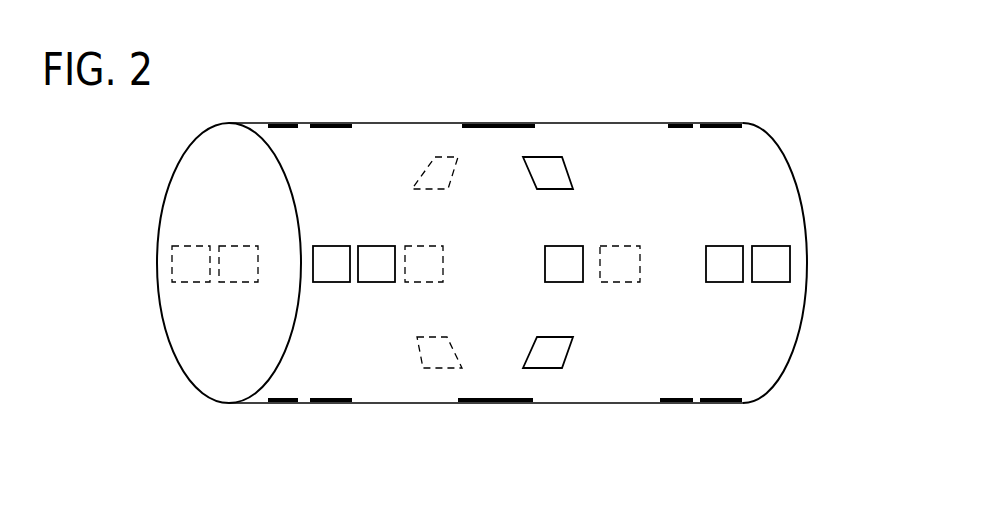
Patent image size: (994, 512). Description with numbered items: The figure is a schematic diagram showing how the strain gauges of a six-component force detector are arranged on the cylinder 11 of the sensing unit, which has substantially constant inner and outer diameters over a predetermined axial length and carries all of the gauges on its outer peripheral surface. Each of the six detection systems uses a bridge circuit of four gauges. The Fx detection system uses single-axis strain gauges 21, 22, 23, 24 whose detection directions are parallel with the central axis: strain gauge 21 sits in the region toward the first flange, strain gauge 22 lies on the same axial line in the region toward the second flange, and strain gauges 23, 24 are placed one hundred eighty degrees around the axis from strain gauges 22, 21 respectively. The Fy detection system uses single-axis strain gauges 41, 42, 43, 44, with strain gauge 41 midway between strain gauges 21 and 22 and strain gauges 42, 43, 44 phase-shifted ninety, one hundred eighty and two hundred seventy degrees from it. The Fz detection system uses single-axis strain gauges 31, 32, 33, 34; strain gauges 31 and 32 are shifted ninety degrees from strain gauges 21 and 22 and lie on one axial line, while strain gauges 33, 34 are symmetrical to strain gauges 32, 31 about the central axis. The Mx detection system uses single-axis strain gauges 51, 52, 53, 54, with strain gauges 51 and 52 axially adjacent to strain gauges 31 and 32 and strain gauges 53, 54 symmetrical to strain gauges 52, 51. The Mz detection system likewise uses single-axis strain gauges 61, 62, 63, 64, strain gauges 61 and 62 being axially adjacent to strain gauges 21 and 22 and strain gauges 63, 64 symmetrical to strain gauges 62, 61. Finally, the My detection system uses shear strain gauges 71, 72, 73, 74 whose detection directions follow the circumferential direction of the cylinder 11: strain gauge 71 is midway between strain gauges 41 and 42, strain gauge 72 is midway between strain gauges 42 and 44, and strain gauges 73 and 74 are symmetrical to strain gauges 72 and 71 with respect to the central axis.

The cylinder 11 is at (772, 142).
The strain gauge 21 is at (292, 123).
The strain gauge 22 is at (718, 123).
The strain gauge 23 is at (717, 403).
The strain gauge 24 is at (291, 403).
The strain gauge 31 is at (323, 275).
The strain gauge 32 is at (783, 262).
The strain gauge 33 is at (647, 250).
The strain gauge 34 is at (180, 268).
The strain gauge 41 is at (503, 123).
The strain gauge 42 is at (564, 246).
The strain gauge 43 is at (417, 281).
The strain gauge 44 is at (507, 403).
The strain gauge 51 is at (373, 247).
The strain gauge 52 is at (731, 281).
The strain gauge 53 is at (598, 284).
The strain gauge 54 is at (236, 247).
The strain gauge 61 is at (326, 123).
The strain gauge 62 is at (686, 123).
The strain gauge 63 is at (683, 403).
The strain gauge 64 is at (323, 403).
The strain gauge 71 is at (543, 157).
The strain gauge 72 is at (543, 366).
The strain gauge 73 is at (437, 160).
The strain gauge 74 is at (430, 367).